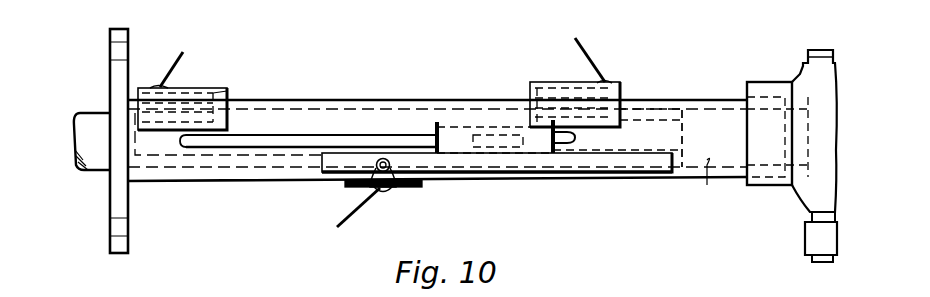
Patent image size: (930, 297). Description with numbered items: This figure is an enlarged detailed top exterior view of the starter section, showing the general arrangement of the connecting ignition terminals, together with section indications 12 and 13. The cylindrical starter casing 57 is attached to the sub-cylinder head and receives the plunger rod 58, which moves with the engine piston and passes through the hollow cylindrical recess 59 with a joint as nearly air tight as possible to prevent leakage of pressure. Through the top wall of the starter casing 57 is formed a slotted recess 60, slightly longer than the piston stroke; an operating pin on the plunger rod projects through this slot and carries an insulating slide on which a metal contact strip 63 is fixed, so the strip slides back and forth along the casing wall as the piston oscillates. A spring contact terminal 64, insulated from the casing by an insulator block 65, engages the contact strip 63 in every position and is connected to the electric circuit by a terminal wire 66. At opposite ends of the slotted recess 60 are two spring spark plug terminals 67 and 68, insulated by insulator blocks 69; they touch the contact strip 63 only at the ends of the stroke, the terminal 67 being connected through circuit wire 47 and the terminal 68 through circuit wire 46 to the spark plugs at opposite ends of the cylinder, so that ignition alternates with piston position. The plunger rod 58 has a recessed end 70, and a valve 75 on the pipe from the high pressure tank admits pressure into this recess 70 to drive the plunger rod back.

The section line 12- 12 is at (72, 143).
The section line 13- 13 is at (500, 83).
The circuit wire 46 is at (176, 58).
The circuit wire 47 is at (578, 42).
The starter casing 57 is at (663, 98).
The plunger rod 58 is at (682, 110).
The hollow cylindrical recess 59 is at (709, 184).
The slotted recess 60 is at (227, 140).
The metal contact strip 63 is at (577, 158).
The spring contact terminal 64 is at (413, 193).
The insulator block 65 is at (422, 181).
The terminal wire 66 is at (347, 212).
The spring spark plug terminal 67 is at (588, 85).
The spring spark plug terminal 68 is at (177, 90).
The insulator block 69 is at (213, 98).
The recessed end 70 is at (635, 135).
The valve 75 is at (775, 177).